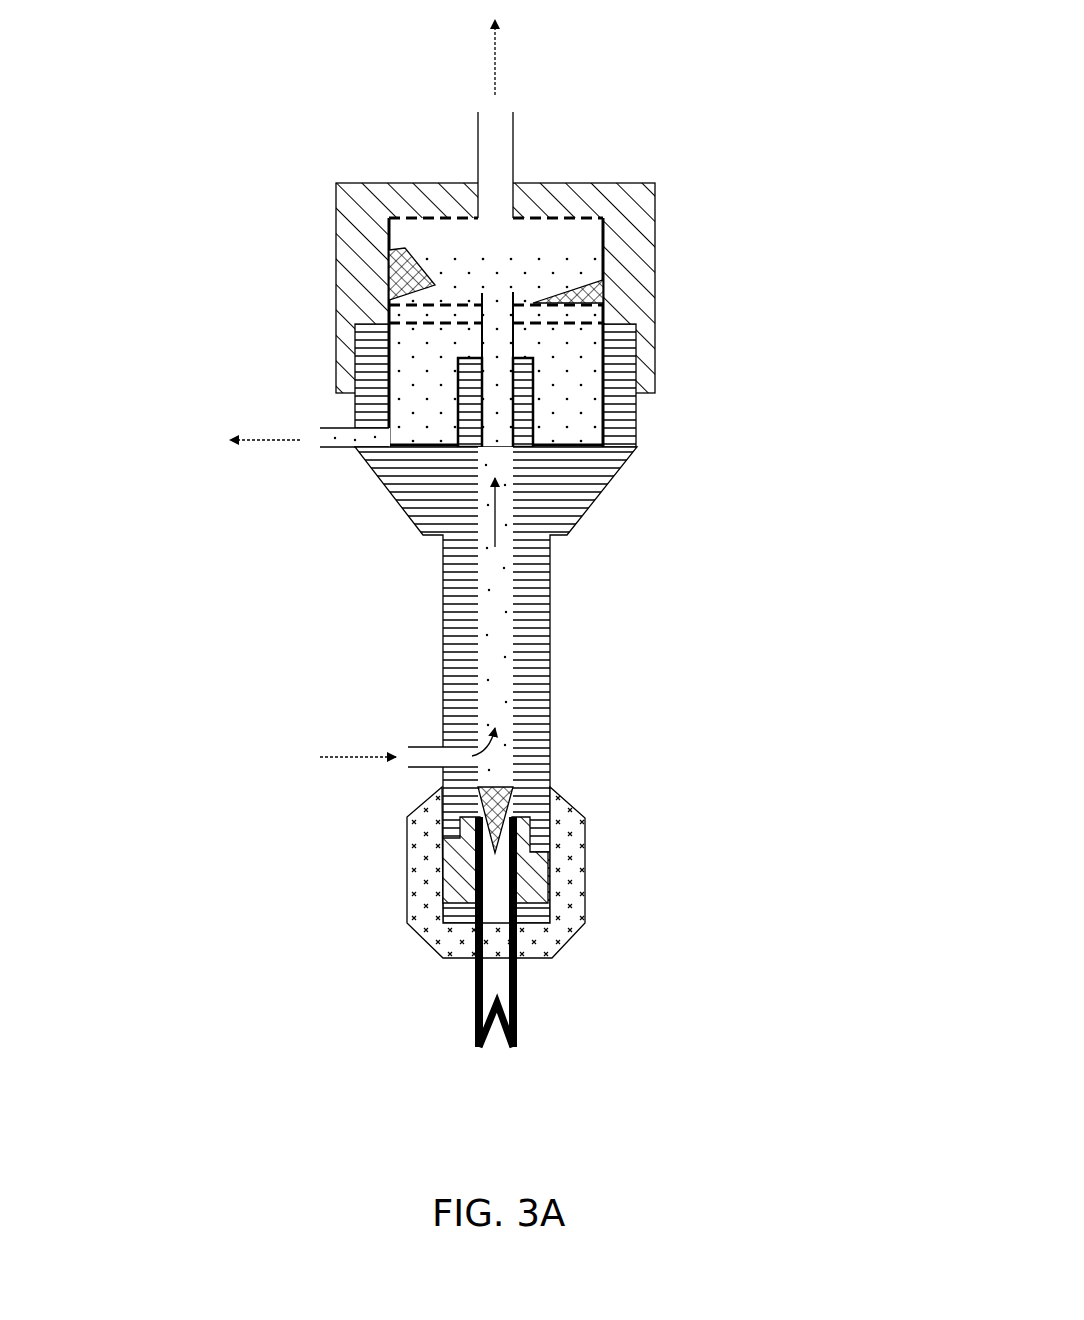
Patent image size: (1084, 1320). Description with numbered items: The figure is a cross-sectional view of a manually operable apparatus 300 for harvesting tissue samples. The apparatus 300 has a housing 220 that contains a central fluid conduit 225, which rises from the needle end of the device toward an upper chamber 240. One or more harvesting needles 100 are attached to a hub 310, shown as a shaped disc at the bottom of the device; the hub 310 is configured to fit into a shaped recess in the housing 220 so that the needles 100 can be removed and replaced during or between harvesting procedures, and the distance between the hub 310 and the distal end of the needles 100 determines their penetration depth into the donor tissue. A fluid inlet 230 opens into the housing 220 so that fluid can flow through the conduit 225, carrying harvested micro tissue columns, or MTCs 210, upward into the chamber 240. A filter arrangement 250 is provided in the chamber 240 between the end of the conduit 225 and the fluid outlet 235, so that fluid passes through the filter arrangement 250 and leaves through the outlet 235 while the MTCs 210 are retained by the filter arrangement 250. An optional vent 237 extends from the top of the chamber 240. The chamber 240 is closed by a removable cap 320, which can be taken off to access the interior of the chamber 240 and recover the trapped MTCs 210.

The harvesting needle 100 is at (518, 985).
The MTCs 210 is at (392, 262).
The housing 220 is at (443, 583).
The fluid conduit 225 is at (495, 627).
The fluid inlet 230 is at (427, 748).
The outlet 235 is at (337, 435).
The vent 237 is at (508, 158).
The upper chamber 240 is at (365, 367).
The filter arrangement 250 is at (392, 263).
The apparatus 300 is at (700, 193).
The hub 310 is at (445, 883).
The removable cap 320 is at (408, 185).